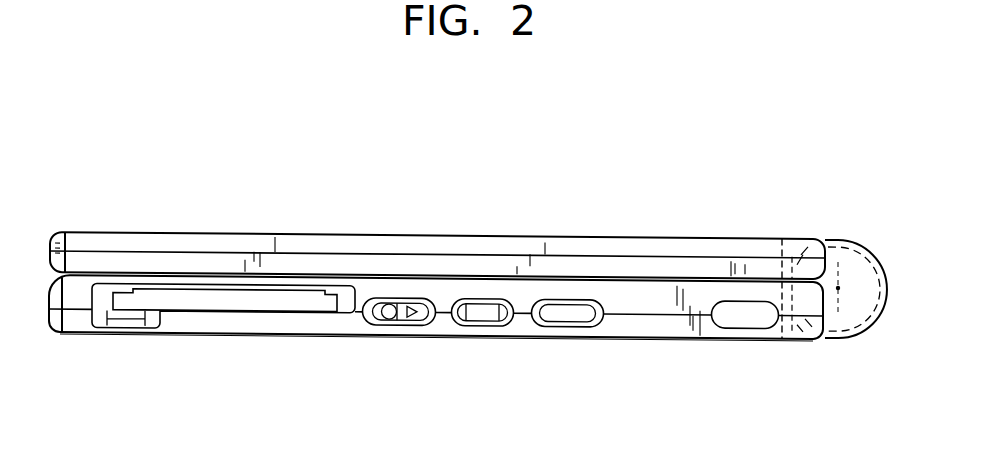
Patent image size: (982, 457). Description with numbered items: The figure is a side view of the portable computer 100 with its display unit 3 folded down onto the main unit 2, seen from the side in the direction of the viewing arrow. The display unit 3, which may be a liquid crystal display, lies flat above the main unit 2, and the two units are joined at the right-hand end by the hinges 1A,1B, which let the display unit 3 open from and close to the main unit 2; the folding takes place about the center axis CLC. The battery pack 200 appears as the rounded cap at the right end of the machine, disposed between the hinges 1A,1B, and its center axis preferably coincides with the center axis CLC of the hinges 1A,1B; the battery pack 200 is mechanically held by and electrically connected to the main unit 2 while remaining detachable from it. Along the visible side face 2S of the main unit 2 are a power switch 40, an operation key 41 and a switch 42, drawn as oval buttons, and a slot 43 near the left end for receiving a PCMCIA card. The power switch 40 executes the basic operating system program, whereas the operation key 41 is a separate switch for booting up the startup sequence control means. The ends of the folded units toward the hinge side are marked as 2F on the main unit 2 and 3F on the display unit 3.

The portable computer 100 is at (603, 183).
The display unit 3 is at (478, 236).
The main unit 2 is at (304, 333).
The side face 2S is at (660, 333).
The front end of lower housing 2F is at (794, 332).
The front end of upper housing 3F is at (793, 240).
The slot 43 is at (216, 330).
The power switch 40 is at (397, 324).
The operation key 41 is at (476, 324).
The switch 42 is at (561, 324).
The center axis CLC is at (838, 286).
The battery pack 200 is at (851, 240).
The hinges 1A,1B is at (834, 339).